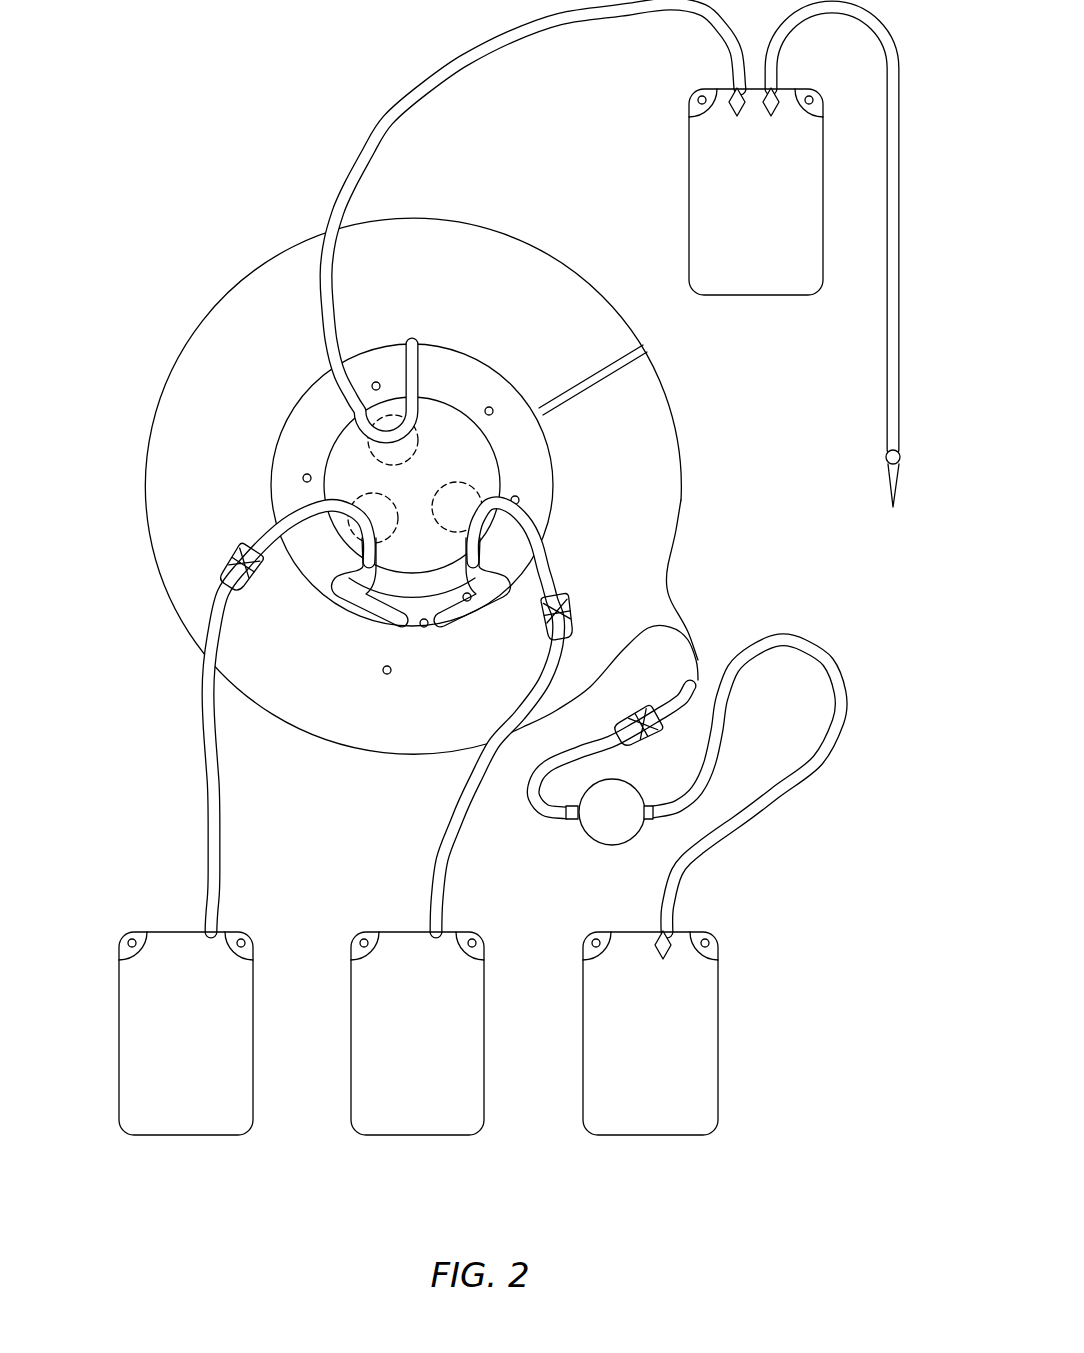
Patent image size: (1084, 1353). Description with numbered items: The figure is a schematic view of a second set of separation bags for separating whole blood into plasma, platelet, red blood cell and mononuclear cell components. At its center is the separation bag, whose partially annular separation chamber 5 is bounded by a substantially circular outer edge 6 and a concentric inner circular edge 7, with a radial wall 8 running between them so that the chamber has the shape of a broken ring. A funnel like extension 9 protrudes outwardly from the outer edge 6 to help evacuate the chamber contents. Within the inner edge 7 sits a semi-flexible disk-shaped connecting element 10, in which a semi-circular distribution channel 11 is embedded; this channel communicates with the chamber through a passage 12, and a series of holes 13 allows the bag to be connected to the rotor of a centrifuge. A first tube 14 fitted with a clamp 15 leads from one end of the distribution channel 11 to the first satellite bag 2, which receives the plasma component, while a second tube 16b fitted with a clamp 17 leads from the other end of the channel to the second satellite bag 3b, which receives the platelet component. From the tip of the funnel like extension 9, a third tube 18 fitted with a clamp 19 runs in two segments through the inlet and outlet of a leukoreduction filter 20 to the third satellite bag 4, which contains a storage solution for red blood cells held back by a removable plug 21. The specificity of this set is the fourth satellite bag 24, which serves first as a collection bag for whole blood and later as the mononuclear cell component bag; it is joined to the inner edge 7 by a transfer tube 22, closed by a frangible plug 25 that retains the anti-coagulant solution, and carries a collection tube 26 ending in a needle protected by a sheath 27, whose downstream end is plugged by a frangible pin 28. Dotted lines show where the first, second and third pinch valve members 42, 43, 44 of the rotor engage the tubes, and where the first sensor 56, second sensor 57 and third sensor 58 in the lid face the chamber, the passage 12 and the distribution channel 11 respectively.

The first satellite bag 2 is at (184, 1128).
The second satellite bag 3b is at (416, 1128).
The third satellite bag 4 is at (670, 1055).
The separation chamber 5 is at (275, 290).
The outer edge 6 is at (413, 470).
The inner edge 7 is at (472, 353).
The radial wall 8 is at (624, 387).
The funnel like extension 9 is at (660, 607).
The disk-shaped connecting element 10 is at (299, 451).
The distribution channel 11 is at (363, 592).
The passage 12 is at (385, 673).
The holes 13 is at (305, 476).
The first tube 14 is at (205, 720).
The clamp 15 is at (222, 562).
The second tube 16b is at (447, 870).
The clamp 17 is at (573, 598).
The third tube 18 is at (838, 670).
The clamp 19 is at (630, 707).
The leukoreduction filter 20 is at (625, 818).
The plug 21 is at (672, 957).
The transfer tube 22 is at (420, 108).
The fourth satellite bag 24 is at (748, 186).
The plug 25 is at (732, 112).
The collection tube 26 is at (888, 360).
The sheath 27 is at (887, 478).
The frangible pin 28 is at (775, 113).
The first pinch valve member 42 is at (380, 497).
The second pinch valve member 43 is at (395, 462).
The third pinch valve member 44 is at (433, 518).
The first sensor 56 is at (398, 618).
The second sensor 57 is at (424, 630).
The third sensor 58 is at (470, 603).